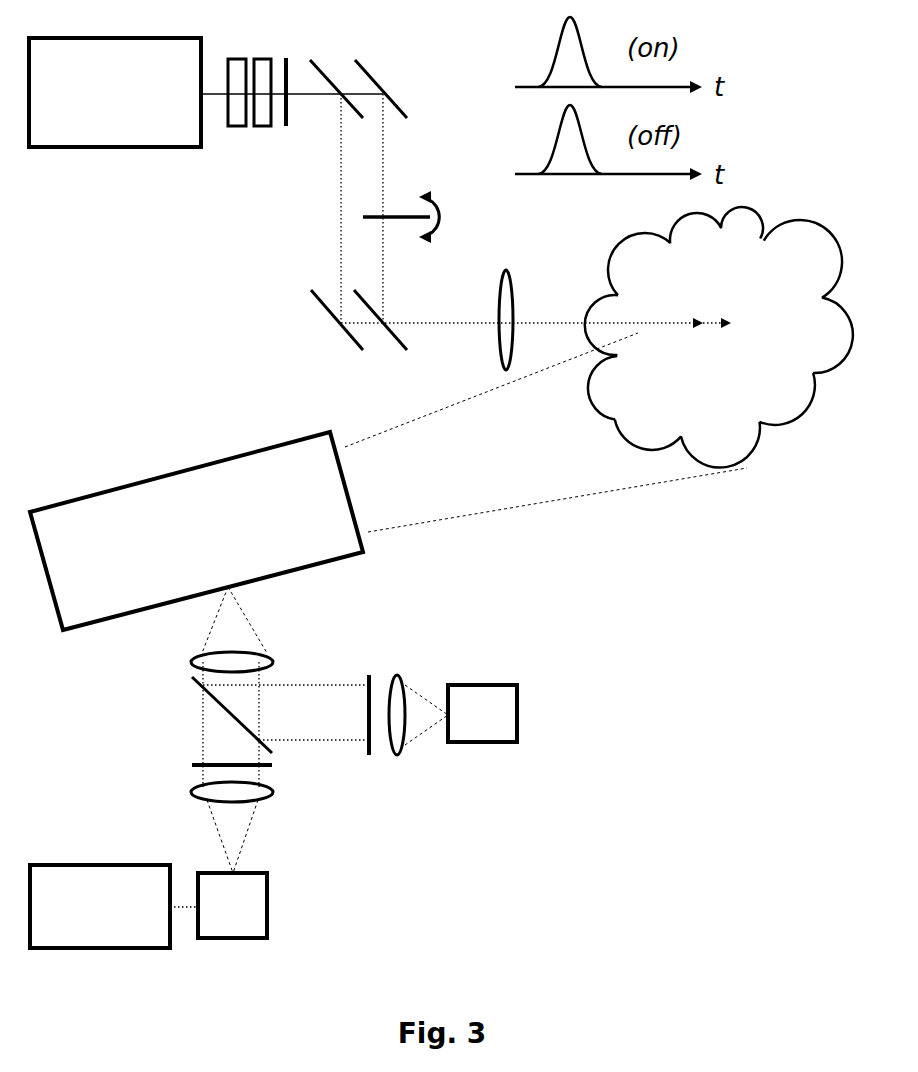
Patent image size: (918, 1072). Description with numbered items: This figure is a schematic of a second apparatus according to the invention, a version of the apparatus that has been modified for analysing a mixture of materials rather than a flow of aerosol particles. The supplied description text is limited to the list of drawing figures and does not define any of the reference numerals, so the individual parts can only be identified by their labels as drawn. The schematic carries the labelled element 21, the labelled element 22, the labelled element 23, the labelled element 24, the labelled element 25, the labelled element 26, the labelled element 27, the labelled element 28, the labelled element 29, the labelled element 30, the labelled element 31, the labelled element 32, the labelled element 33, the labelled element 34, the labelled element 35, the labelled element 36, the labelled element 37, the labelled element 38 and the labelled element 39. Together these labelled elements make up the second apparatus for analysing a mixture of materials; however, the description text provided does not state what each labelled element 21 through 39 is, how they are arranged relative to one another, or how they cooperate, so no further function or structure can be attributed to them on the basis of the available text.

The light source 21 is at (115, 92).
The first optical modulator 22 is at (234, 71).
The second optical modulator 23 is at (260, 118).
The filter 24 is at (286, 71).
The beam splitter 25 is at (336, 67).
The mirror 26 is at (404, 89).
The mirror 27 is at (337, 343).
The beam combiner 28 is at (380, 343).
The rotation / chopper indicator 29 is at (429, 217).
The lens 30 is at (506, 301).
The gas cloud / sample 31 is at (719, 337).
The detector unit 32 is at (196, 531).
The lens 33 is at (279, 724).
The beam splitter 34 is at (207, 715).
The filter 35 is at (207, 769).
The filter 36 is at (370, 739).
The detector 37 is at (232, 905).
The processing unit 38 is at (100, 906).
The detector 39 is at (482, 713).